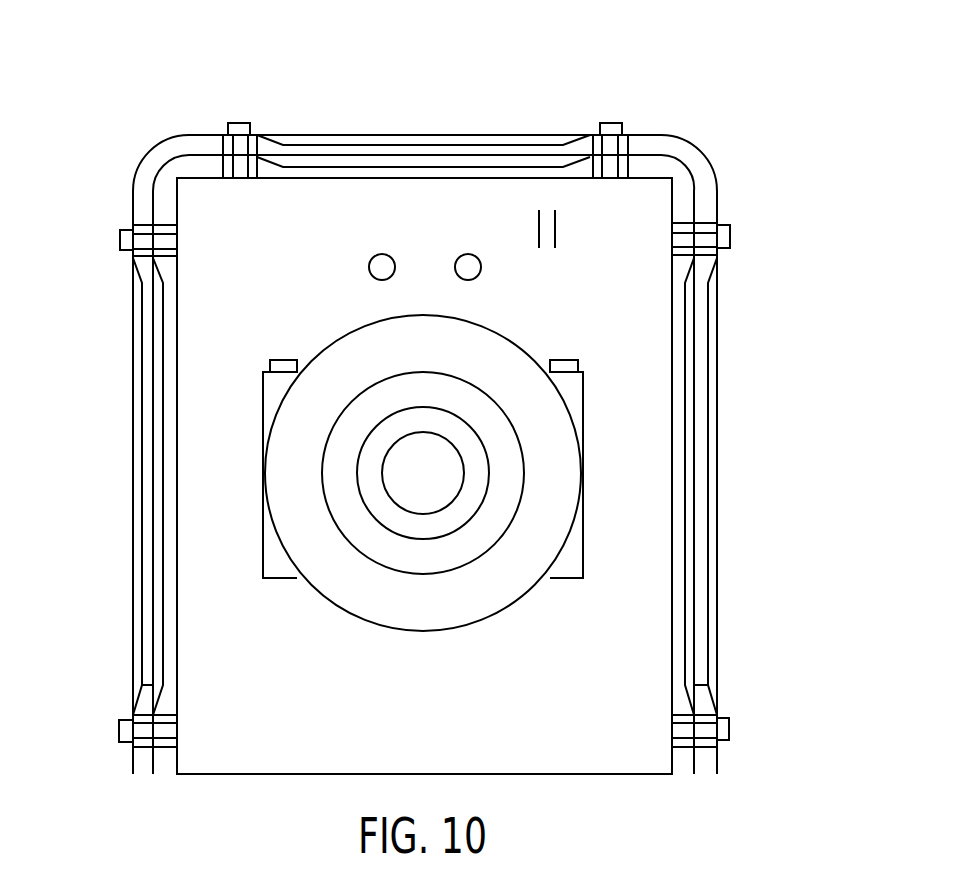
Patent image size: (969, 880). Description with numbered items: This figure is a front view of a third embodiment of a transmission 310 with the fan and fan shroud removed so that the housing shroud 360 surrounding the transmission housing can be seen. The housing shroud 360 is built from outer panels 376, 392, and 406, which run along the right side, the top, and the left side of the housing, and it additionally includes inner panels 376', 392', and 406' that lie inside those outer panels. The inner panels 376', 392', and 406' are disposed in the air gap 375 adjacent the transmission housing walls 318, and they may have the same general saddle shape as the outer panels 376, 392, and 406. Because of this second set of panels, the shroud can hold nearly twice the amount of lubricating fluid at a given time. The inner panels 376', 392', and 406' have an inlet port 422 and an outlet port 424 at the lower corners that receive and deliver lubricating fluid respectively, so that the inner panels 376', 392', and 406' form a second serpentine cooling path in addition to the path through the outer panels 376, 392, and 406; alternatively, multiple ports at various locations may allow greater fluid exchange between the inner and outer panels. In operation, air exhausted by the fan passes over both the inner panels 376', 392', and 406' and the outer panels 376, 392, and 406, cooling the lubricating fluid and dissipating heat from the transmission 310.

The transmission 310 is at (732, 114).
The transmission housing walls 318 is at (696, 211).
The housing shroud 360 is at (648, 124).
The air gap 375 is at (681, 352).
The outer panel 376 is at (763, 482).
The inner panel 376' is at (747, 482).
The outer panel 392 is at (423, 101).
The inner panel 392' is at (423, 112).
The outer panel 406 is at (79, 482).
The inner panel 406' is at (92, 482).
The inlet port 422 is at (700, 684).
The outlet port 424 is at (148, 682).